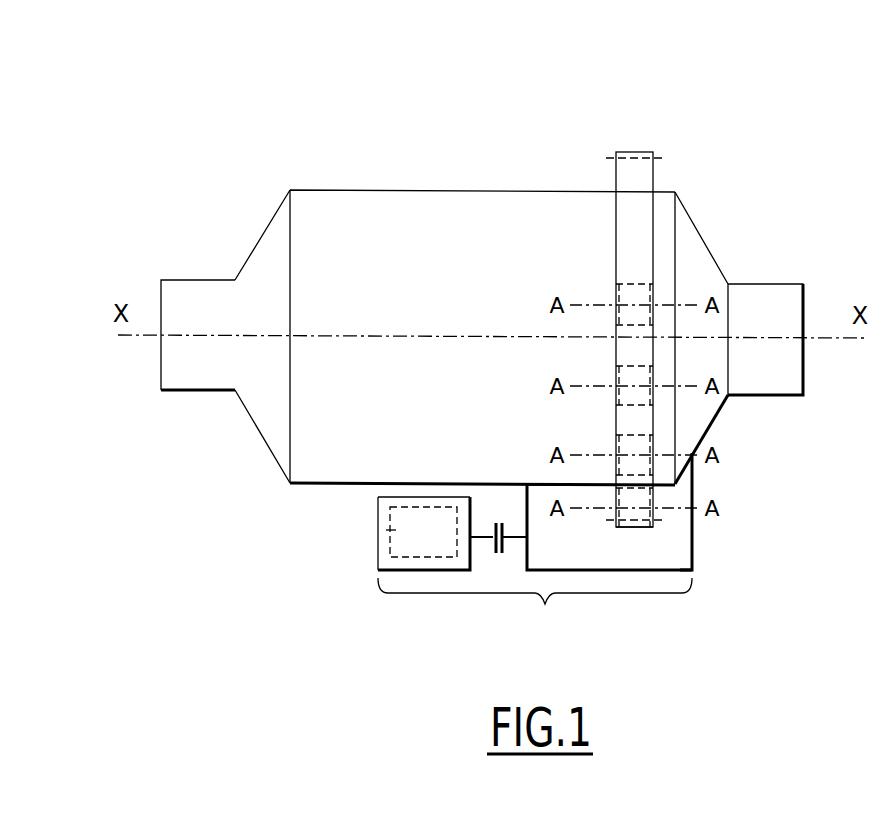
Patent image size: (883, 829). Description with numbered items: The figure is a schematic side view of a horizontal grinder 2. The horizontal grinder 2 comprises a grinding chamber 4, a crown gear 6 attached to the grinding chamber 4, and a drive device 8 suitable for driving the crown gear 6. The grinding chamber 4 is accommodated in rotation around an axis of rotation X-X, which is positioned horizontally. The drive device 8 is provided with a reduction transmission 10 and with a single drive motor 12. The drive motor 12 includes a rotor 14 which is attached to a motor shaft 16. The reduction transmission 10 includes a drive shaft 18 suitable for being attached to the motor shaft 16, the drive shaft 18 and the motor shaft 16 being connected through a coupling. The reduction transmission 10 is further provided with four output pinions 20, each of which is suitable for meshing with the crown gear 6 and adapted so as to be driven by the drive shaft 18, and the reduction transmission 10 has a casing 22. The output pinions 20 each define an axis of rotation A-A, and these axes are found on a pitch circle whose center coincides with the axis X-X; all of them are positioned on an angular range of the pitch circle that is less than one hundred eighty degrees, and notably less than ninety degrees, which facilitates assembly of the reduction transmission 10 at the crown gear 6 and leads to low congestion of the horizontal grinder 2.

The horizontal grinder 2 is at (442, 600).
The grinding chamber 4 is at (435, 205).
The crown gear 6 is at (640, 172).
The drive device 8 is at (535, 607).
The reduction transmission 10 is at (673, 537).
The drive motor 12 is at (386, 530).
The rotor 14 is at (422, 507).
The motor shaft 16 is at (485, 537).
The drive shaft 18 is at (516, 530).
The output pinions 20 is at (632, 527).
The casing 22 is at (680, 572).